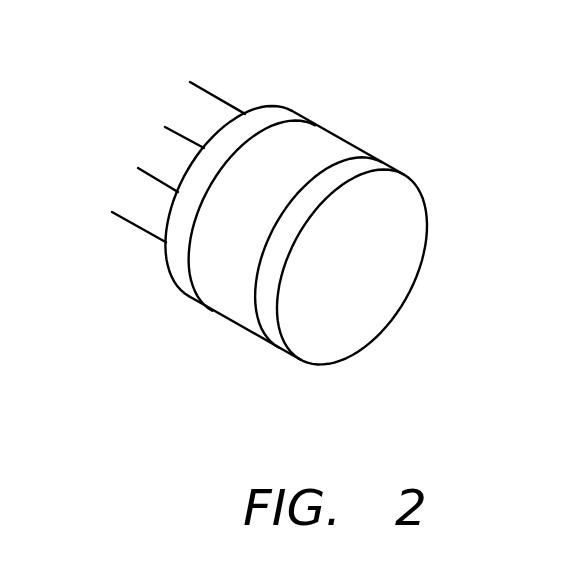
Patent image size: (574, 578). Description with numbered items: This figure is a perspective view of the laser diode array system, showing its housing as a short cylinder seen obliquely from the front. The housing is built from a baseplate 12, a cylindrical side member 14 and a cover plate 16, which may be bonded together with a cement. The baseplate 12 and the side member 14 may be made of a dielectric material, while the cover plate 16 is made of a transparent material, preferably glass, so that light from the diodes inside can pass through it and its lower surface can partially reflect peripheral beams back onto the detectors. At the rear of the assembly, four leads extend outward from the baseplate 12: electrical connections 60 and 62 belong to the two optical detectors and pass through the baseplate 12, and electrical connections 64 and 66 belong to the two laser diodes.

The baseplate 12 is at (272, 112).
The cylindrical side member 14 is at (331, 140).
The cover plate 16 is at (402, 199).
The electrical connection 60 is at (231, 106).
The electrical connection 62 is at (139, 227).
The electrical connection 64 is at (178, 134).
The electrical connection 66 is at (157, 179).